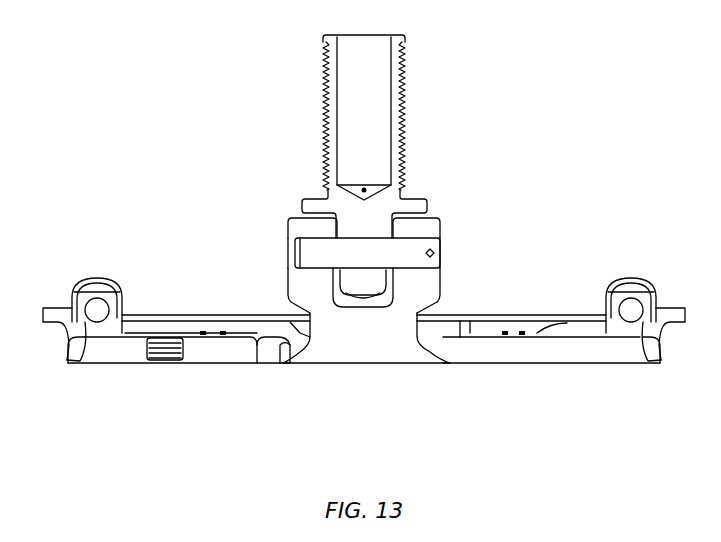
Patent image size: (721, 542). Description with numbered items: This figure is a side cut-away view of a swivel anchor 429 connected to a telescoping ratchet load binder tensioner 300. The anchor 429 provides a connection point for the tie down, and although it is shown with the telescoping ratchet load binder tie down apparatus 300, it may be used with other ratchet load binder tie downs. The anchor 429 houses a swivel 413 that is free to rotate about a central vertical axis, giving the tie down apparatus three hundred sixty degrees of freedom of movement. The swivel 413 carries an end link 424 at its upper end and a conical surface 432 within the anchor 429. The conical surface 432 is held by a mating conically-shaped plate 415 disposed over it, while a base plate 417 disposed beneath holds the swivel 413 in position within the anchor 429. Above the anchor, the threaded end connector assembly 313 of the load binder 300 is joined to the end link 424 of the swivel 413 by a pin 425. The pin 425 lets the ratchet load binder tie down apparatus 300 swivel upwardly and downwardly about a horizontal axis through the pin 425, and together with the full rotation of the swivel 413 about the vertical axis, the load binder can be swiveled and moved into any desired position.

The telescoping ratchet load binder tensioner 300 is at (383, 92).
The end connector assembly 313 is at (375, 215).
The end link 424 is at (433, 282).
The pin 425 is at (317, 256).
The swivel 413 is at (385, 333).
The conically-shaped plate 415 is at (447, 333).
The base plate 417 is at (235, 352).
The conical surface 432 is at (303, 343).
The anchor 429 is at (545, 410).